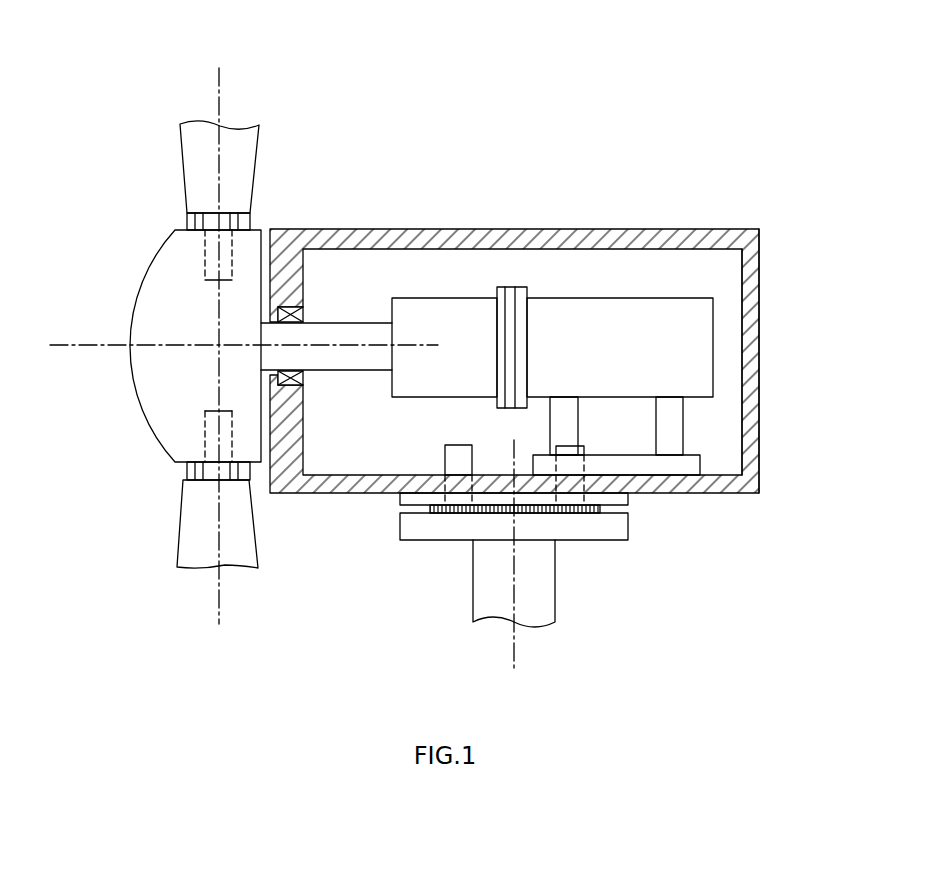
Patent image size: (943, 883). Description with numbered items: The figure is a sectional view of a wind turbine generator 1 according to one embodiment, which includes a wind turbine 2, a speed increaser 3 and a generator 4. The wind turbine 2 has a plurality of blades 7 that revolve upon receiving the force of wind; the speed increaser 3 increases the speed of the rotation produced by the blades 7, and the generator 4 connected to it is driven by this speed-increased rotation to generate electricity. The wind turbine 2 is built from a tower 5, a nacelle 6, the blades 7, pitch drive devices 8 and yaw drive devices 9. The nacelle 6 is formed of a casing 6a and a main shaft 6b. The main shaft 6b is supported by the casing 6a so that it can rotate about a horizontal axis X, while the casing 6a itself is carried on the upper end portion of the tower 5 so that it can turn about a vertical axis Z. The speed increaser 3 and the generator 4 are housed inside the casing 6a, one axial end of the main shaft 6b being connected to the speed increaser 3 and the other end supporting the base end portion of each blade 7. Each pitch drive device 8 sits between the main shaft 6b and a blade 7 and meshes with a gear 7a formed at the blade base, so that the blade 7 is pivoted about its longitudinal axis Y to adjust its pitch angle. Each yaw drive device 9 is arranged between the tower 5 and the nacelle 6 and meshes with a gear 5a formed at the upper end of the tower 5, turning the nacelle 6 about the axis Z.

The wind turbine generator 1 is at (550, 372).
The wind turbine 2 is at (156, 319).
The speed increaser 3 is at (444, 298).
The generator 4 is at (617, 298).
The tower 5 is at (518, 560).
The gear 5a is at (438, 514).
The nacelle 6 is at (760, 272).
The casing 6a is at (760, 418).
The main shaft 6b is at (346, 372).
The blade 7 is at (181, 174).
The gear 7a is at (187, 221).
The pitch drive device 8 is at (205, 263).
The yaw drive device 9 is at (445, 447).
The axis X is at (78, 345).
The axis Y is at (218, 87).
The axis Z is at (514, 657).